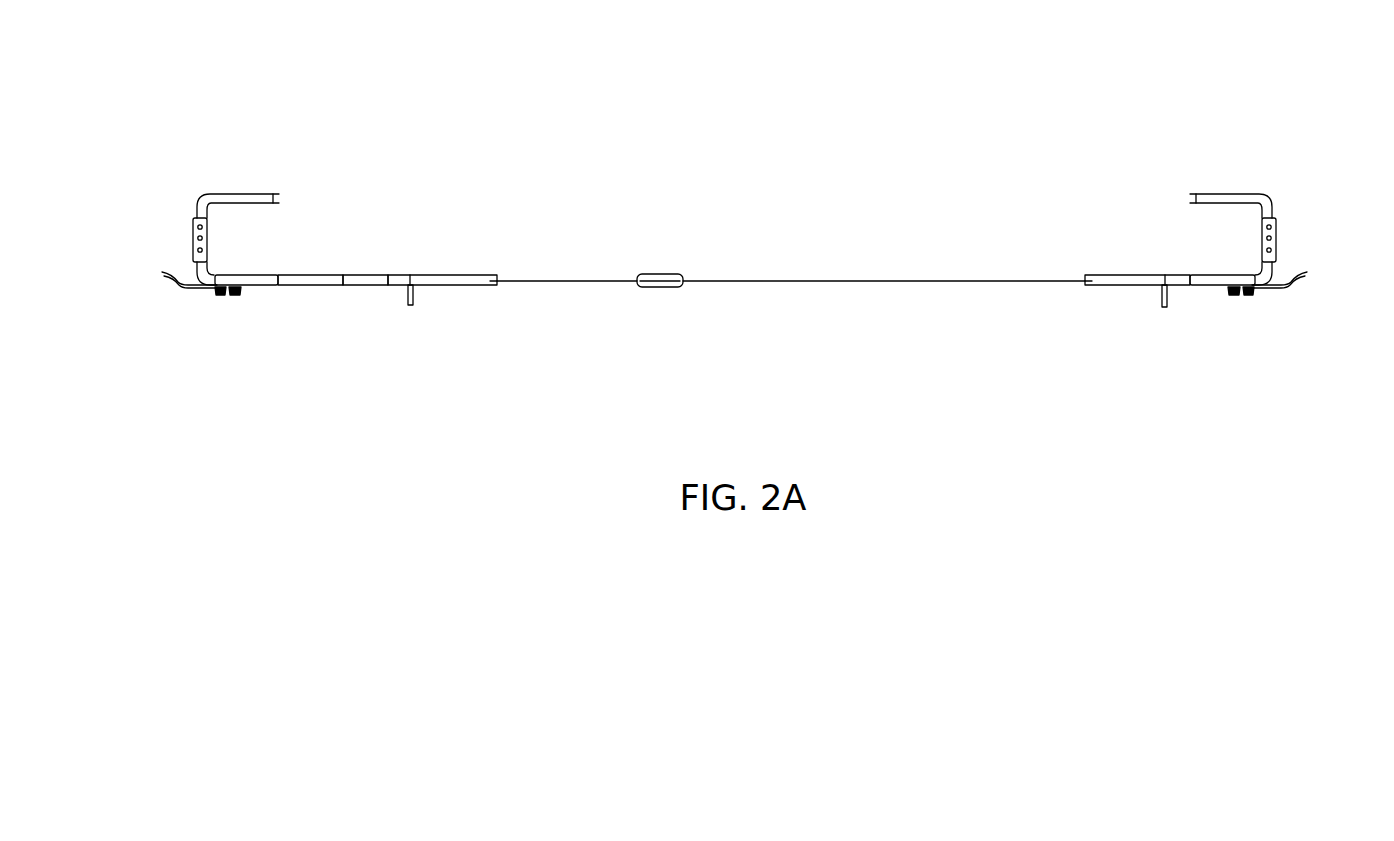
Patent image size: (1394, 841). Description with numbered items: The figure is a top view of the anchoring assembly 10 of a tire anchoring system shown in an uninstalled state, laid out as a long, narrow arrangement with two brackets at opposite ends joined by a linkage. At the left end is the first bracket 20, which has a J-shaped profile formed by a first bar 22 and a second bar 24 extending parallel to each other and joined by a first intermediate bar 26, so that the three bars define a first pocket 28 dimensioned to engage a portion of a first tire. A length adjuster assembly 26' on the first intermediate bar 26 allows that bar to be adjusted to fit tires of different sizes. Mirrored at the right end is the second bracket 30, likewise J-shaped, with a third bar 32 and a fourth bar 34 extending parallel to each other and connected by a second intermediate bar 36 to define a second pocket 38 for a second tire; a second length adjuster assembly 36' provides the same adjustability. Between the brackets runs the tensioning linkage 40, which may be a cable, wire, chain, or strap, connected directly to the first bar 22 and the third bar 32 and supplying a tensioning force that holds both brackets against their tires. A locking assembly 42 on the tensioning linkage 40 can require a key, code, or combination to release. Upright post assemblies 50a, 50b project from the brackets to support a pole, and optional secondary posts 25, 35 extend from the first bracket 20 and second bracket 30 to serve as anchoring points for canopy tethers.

The anchoring assembly 10 is at (735, 286).
The first bracket 20 is at (222, 169).
The first bar 22 is at (307, 290).
The second bar 24 is at (275, 193).
The secondary post 25 is at (176, 290).
The first intermediate bar 26 is at (152, 226).
The length adjuster assembly 26' is at (141, 254).
The first pocket 28 is at (240, 235).
The second bracket 30 is at (1251, 169).
The third bar 32 is at (1112, 288).
The fourth bar 34 is at (1199, 193).
The secondary post 35 is at (1298, 289).
The second intermediate bar 36 is at (1316, 226).
The length adjuster assembly 36' is at (1328, 254).
The second pocket 38 is at (1235, 235).
The tensioning linkage 40 is at (803, 283).
The locking assembly 42 is at (662, 273).
The upright post assembly 50a is at (413, 291).
The upright post assembly 50b is at (1168, 291).